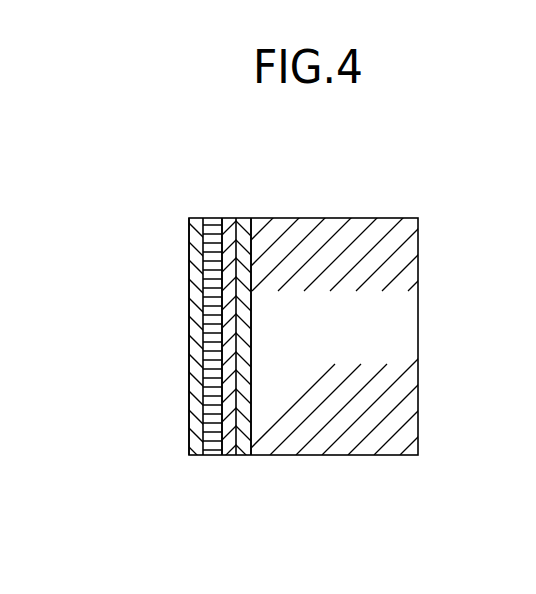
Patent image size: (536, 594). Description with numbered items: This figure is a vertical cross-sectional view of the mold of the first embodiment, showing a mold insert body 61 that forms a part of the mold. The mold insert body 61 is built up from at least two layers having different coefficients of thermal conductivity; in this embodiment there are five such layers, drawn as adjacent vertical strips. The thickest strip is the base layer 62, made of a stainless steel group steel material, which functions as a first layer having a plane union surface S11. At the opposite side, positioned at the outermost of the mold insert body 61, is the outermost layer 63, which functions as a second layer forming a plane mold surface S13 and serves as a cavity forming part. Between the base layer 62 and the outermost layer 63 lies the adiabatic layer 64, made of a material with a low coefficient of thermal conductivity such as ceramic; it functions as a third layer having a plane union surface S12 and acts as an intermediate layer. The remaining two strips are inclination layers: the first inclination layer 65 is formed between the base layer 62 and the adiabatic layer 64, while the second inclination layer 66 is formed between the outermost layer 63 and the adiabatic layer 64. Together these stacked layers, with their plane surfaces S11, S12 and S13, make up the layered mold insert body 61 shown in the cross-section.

The mold insert body 61 is at (108, 161).
The base layer 62 is at (324, 218).
The outermost layer 63 is at (200, 218).
The adiabatic layer 64 is at (232, 218).
The first inclination layer 65 is at (242, 456).
The second inclination layer 66 is at (208, 456).
The union surface S11 is at (258, 272).
The union surface S12 is at (220, 388).
The mold surface S13 is at (191, 331).